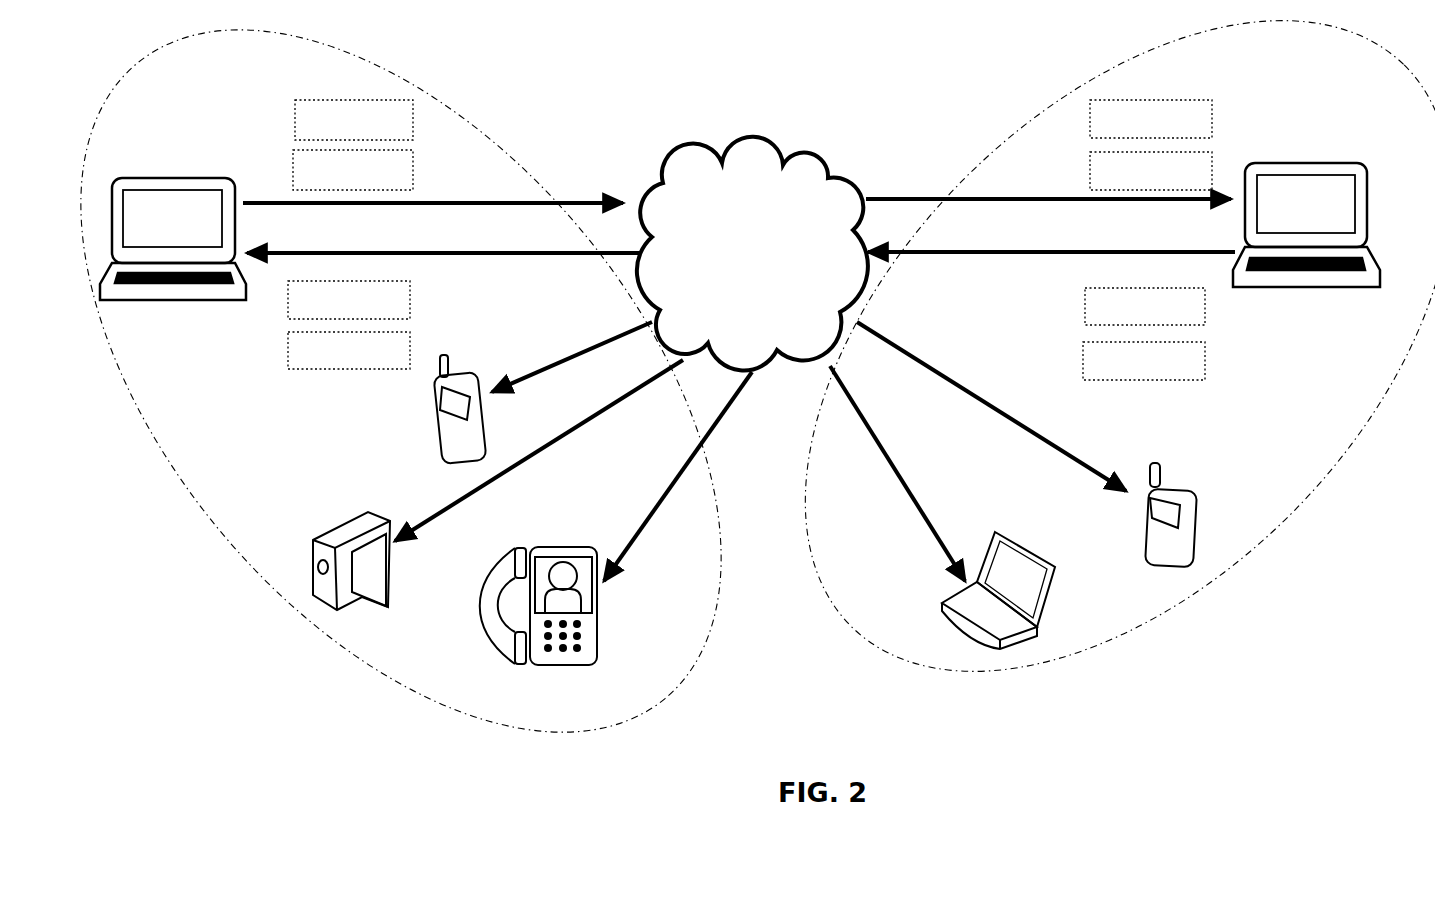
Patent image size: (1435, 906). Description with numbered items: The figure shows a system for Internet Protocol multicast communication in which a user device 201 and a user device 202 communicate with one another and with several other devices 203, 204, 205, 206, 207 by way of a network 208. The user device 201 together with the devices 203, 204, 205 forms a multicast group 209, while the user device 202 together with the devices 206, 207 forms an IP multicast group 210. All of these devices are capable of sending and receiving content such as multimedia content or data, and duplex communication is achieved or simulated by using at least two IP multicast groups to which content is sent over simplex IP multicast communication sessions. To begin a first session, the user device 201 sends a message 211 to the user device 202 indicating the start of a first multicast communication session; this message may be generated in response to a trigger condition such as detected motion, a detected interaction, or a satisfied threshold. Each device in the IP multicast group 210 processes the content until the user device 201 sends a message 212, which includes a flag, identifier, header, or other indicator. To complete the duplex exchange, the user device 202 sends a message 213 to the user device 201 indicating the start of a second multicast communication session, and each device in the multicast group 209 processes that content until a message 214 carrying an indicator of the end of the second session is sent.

The user device 201 is at (160, 181).
The user device 202 is at (1335, 158).
The device 203 is at (453, 367).
The device 204 is at (333, 520).
The device 205 is at (533, 550).
The device 206 is at (1010, 540).
The device 207 is at (1178, 483).
The network 208 is at (735, 321).
The multicast group 209 is at (267, 585).
The IP multicast group 210 is at (958, 672).
The message 211 is at (334, 133).
The message 212 is at (333, 183).
The message 213 is at (329, 313).
The message 214 is at (329, 364).